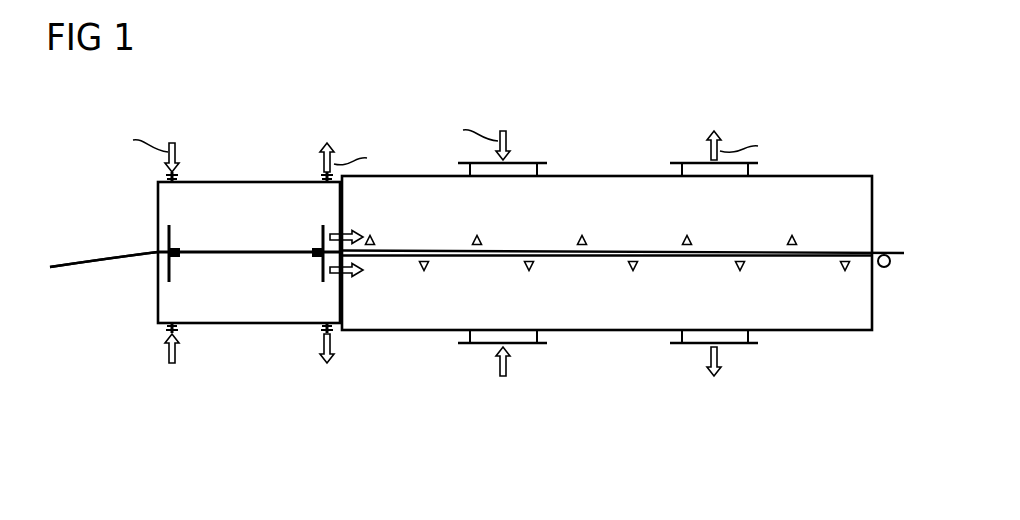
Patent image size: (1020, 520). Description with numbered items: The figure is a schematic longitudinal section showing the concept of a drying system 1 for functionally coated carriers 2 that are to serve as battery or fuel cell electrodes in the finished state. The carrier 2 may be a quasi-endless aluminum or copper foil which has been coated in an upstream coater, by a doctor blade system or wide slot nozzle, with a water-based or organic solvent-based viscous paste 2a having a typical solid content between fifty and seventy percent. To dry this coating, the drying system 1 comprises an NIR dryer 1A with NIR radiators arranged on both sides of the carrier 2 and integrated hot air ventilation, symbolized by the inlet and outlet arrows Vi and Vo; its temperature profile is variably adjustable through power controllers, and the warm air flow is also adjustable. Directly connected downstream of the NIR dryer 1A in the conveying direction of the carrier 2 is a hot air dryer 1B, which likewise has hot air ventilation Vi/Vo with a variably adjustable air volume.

The drying system 1 is at (858, 110).
The NIR dryer 1A is at (250, 182).
The hot air dryer 1B is at (606, 176).
The carrier 2 is at (130, 262).
The paste 2a is at (76, 240).